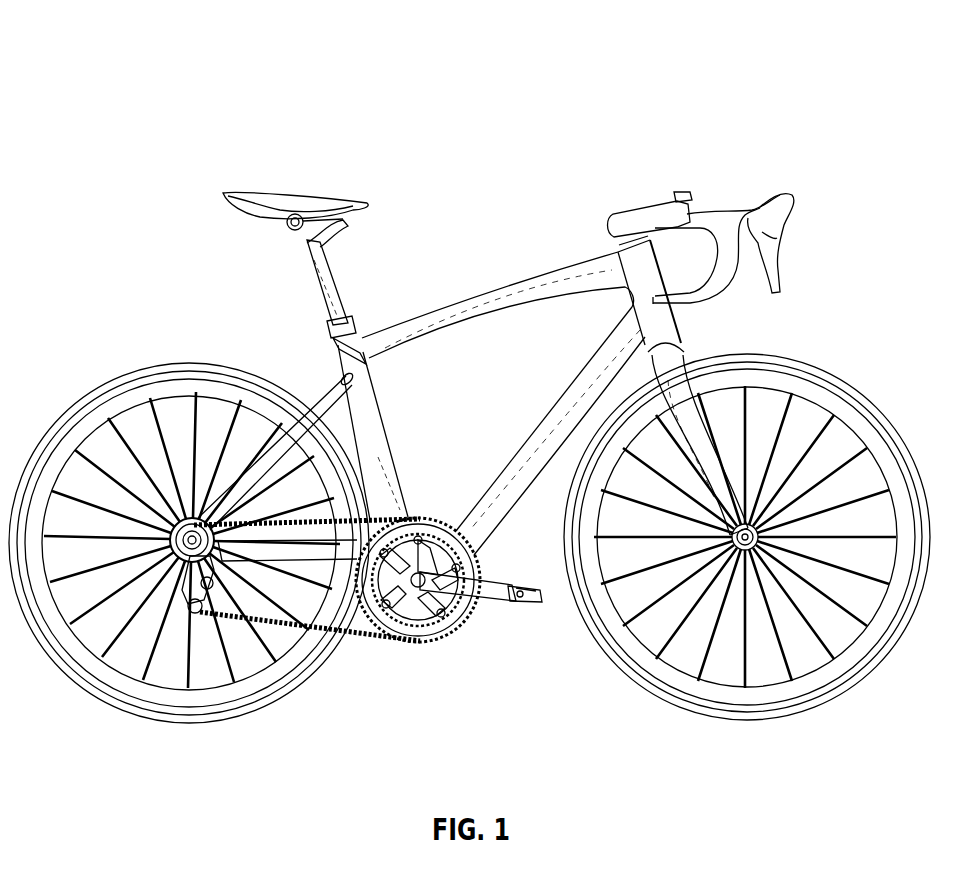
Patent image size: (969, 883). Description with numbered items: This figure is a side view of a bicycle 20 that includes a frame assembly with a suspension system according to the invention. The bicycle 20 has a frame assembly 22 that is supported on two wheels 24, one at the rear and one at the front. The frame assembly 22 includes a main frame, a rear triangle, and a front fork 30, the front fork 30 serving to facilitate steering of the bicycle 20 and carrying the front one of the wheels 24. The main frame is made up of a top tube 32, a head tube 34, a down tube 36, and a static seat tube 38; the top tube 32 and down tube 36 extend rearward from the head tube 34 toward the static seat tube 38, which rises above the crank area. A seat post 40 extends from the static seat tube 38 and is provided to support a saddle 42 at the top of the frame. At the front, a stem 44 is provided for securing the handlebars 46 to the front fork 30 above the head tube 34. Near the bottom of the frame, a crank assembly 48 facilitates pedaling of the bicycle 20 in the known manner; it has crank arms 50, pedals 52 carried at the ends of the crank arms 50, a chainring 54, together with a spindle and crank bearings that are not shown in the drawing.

The bicycle 20 is at (242, 98).
The frame assembly 22 is at (492, 212).
The wheels 24 is at (115, 387).
The front fork 30 is at (710, 380).
The top tube 32 is at (443, 312).
The head tube 34 is at (662, 327).
The down tube 36 is at (532, 437).
The static seat tube 38 is at (365, 410).
The seat post 40 is at (328, 283).
The saddle 42 is at (337, 197).
The stem 44 is at (653, 220).
The handlebars 46 is at (707, 220).
The crank assembly 48 is at (462, 638).
The crank arms 50 is at (485, 577).
The pedals 52 is at (523, 600).
The chainring 54 is at (400, 630).